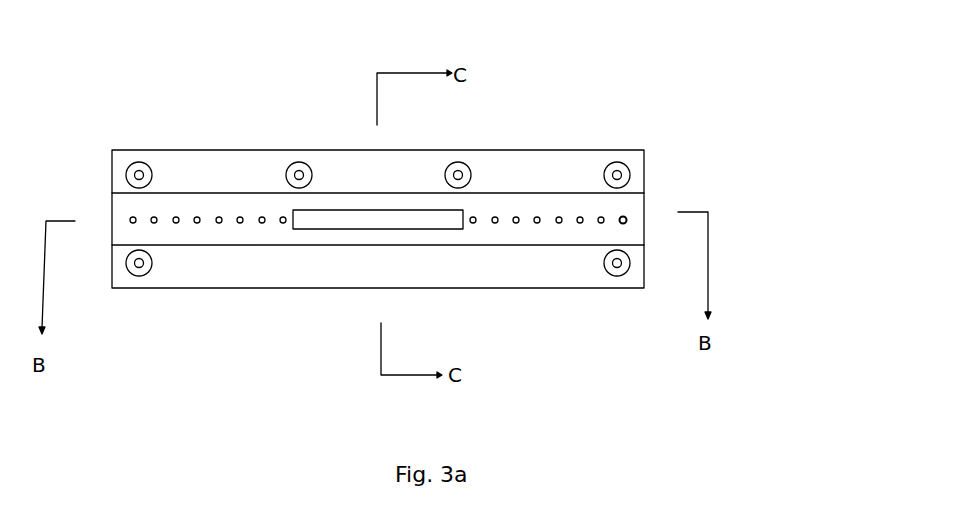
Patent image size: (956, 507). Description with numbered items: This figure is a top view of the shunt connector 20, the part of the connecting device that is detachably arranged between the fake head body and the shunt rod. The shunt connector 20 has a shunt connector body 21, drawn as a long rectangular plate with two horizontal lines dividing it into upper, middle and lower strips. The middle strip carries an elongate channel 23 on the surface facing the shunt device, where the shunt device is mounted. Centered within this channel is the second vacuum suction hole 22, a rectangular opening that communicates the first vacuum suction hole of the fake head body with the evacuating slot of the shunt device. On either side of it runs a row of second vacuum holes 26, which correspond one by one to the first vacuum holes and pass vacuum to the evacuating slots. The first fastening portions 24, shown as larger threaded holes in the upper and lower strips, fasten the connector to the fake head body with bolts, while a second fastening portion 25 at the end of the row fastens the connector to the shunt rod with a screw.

The shunt connector 20 is at (675, 185).
The shunt connector body 21 is at (210, 183).
The second vacuum suction hole 22 is at (336, 223).
The elongate channel 23 is at (124, 210).
The first fastening portion 24 is at (297, 177).
The second fastening portion 25 is at (626, 217).
The second vacuum holes 26 is at (516, 217).